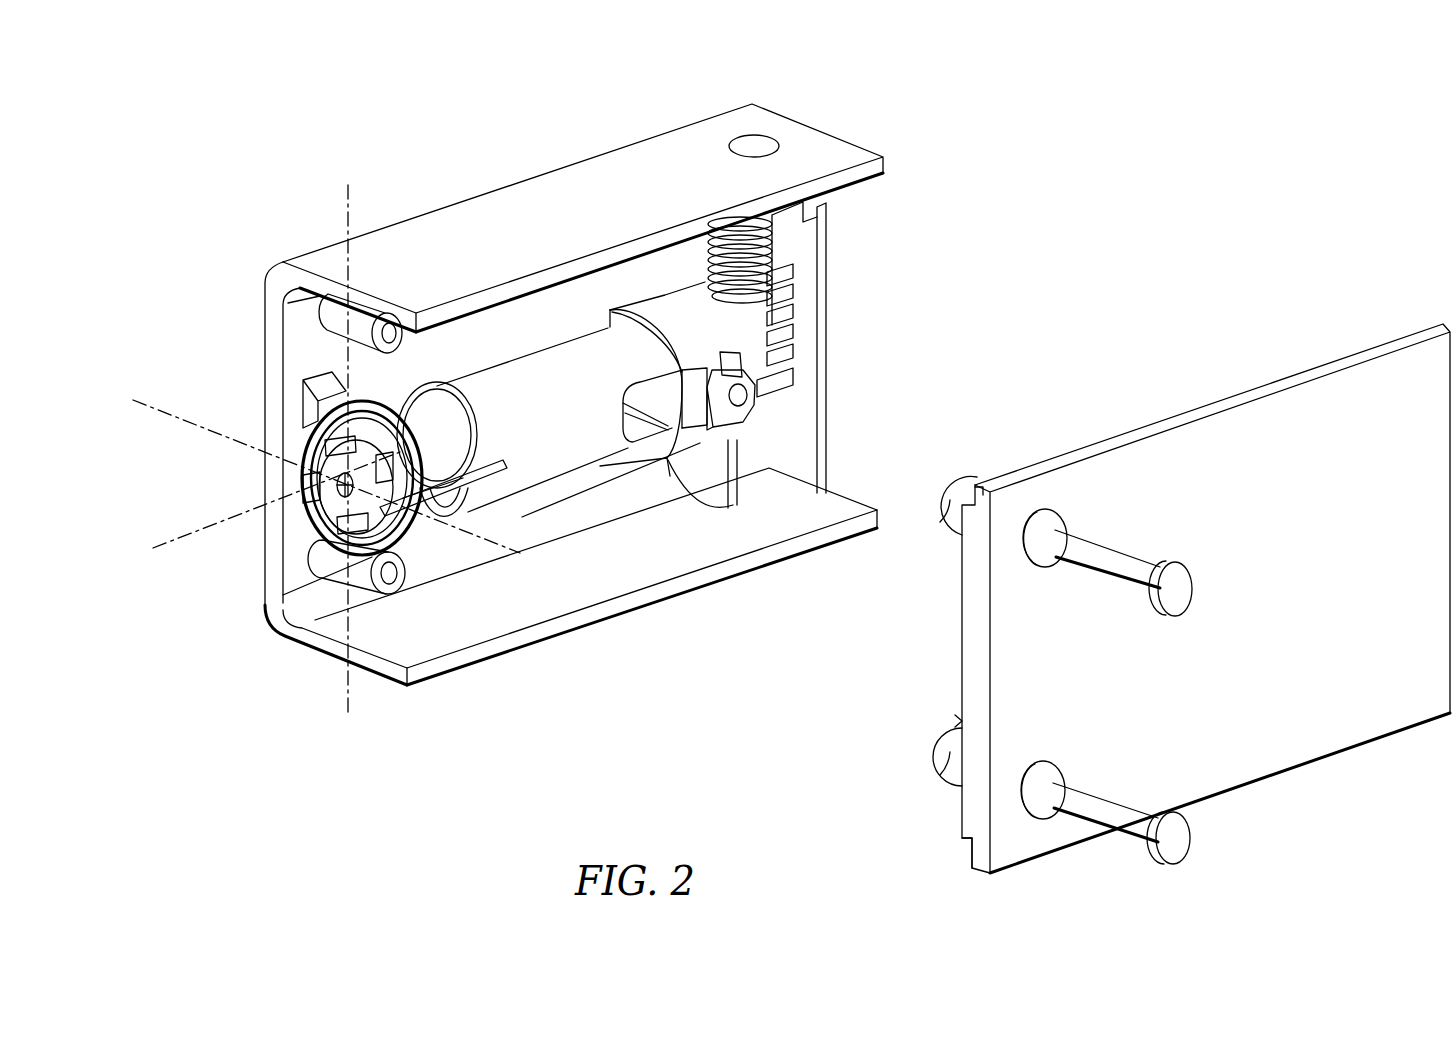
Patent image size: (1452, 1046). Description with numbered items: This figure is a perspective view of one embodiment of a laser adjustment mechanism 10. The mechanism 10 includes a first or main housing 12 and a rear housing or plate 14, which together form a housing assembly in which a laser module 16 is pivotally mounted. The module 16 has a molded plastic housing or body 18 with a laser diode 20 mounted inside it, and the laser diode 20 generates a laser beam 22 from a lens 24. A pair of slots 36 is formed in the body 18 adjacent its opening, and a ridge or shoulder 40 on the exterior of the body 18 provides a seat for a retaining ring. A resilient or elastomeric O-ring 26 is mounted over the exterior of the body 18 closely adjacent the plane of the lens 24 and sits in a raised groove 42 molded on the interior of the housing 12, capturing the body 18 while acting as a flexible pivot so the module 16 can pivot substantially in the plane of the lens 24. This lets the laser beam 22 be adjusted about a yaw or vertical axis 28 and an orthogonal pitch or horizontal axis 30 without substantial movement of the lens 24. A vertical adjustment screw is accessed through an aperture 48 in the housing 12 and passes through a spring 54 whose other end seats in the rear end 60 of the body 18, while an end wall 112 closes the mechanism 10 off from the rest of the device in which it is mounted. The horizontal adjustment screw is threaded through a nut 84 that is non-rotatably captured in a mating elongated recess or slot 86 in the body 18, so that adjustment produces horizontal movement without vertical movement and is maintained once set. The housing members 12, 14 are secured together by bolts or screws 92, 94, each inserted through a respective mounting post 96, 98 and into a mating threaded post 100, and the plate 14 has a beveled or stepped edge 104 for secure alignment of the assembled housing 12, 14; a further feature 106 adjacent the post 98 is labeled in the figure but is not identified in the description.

The laser adjustment mechanism 10 is at (1080, 221).
The main housing 12 is at (574, 225).
The rear housing or plate 14 is at (1316, 570).
The laser module 16 is at (557, 455).
The module body 18 is at (567, 430).
The laser diode 20 is at (353, 513).
The laser beam 22 is at (162, 545).
The lens 24 is at (320, 495).
The O-ring 26 is at (362, 407).
The vertical axis 28 is at (347, 207).
The horizontal axis 30 is at (147, 403).
The slots 36 is at (447, 521).
The ridge or shoulder 40 is at (424, 387).
The raised groove 42 is at (320, 380).
The aperture 48 is at (760, 144).
The spring 54 is at (780, 262).
The rear end of body 60 is at (668, 304).
The nut 84 is at (742, 418).
The elongated recess or slot 86 is at (722, 348).
The bolt or screw 92 is at (1112, 798).
The bolt or screw 94 is at (1100, 568).
The mounting post 96 is at (947, 778).
The mounting post 98 is at (947, 520).
The threaded post 100 is at (393, 582).
The beveled or stepped edge 104 is at (965, 850).
The notch 106 is at (968, 492).
The end wall 112 is at (801, 452).